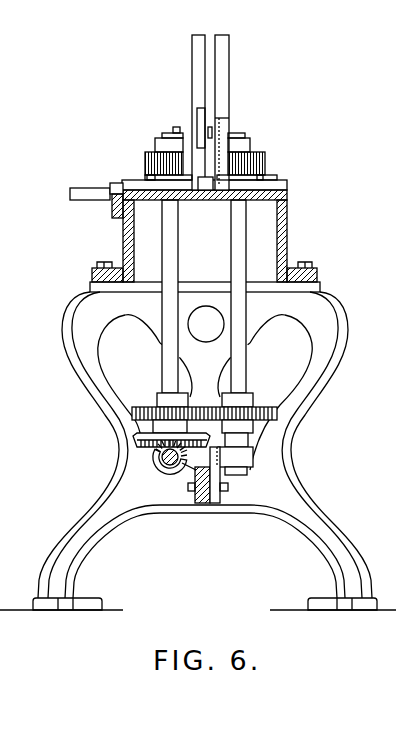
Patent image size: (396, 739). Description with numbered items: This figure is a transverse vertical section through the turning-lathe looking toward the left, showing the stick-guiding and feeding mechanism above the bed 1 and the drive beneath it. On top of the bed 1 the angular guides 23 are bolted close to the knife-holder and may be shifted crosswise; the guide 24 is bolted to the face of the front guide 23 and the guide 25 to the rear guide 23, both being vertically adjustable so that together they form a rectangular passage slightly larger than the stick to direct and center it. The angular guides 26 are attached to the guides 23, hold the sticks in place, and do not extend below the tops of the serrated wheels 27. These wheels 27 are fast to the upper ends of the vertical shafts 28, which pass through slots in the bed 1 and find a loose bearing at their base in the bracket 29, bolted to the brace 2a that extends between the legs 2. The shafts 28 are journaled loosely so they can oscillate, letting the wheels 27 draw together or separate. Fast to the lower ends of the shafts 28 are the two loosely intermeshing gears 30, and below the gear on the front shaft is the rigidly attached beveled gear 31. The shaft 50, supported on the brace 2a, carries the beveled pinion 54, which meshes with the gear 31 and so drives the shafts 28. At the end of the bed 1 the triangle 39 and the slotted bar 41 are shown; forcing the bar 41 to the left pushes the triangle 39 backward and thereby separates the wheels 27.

The bed 1 is at (288, 230).
The legs 2 is at (198, 446).
The brace 2a is at (203, 504).
The angular guides 23 is at (287, 183).
The guide 24 is at (200, 113).
The guide 25 is at (206, 190).
The angular guides 26 is at (229, 57).
The serrated wheels 27 is at (263, 163).
The vertical shafts 28 is at (252, 257).
The bracket 29 is at (218, 468).
The loosely-intermeshing gears 30 is at (268, 407).
The beveled gear 31 is at (137, 435).
The triangle 39 is at (90, 197).
The bar 41 is at (115, 212).
The shaft 50 is at (155, 456).
The beveled pinion 54 is at (172, 474).